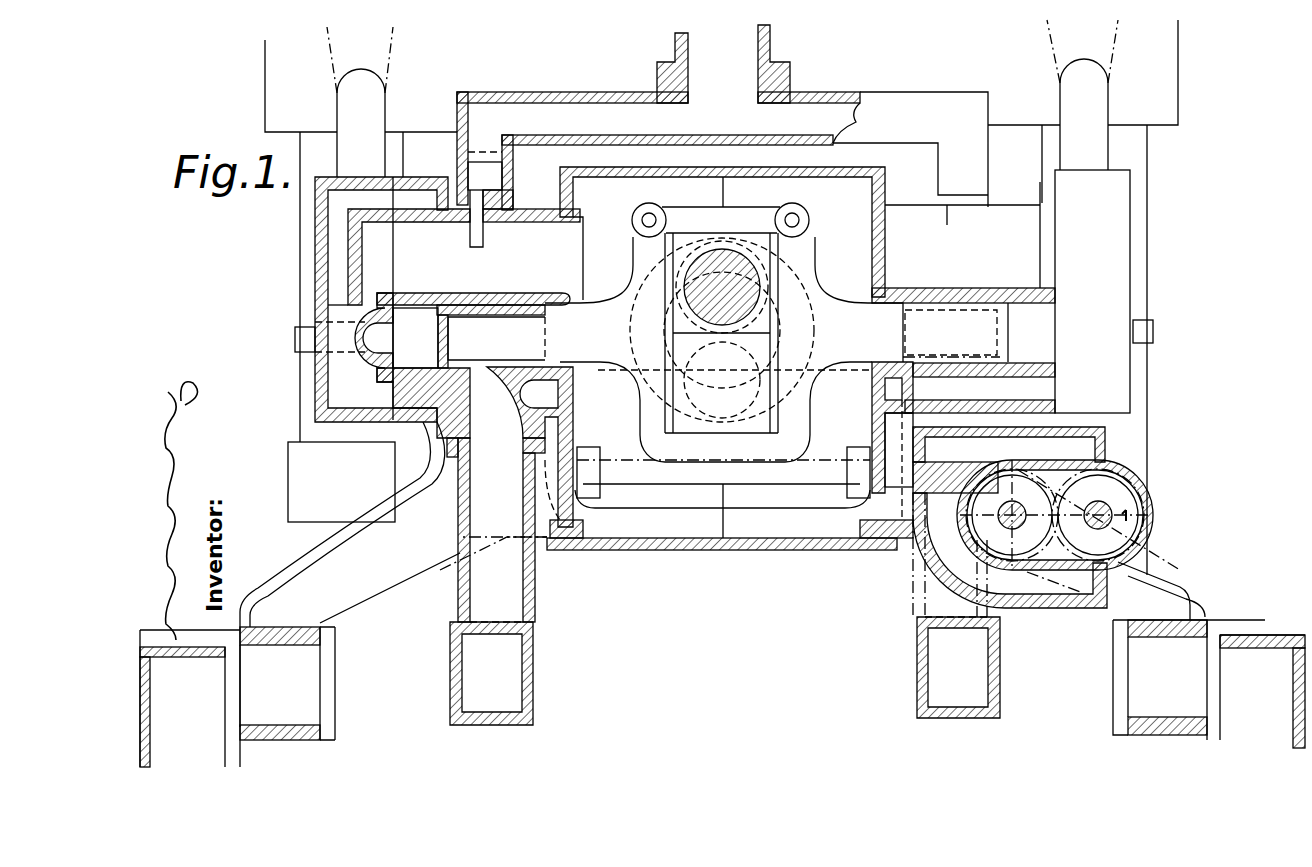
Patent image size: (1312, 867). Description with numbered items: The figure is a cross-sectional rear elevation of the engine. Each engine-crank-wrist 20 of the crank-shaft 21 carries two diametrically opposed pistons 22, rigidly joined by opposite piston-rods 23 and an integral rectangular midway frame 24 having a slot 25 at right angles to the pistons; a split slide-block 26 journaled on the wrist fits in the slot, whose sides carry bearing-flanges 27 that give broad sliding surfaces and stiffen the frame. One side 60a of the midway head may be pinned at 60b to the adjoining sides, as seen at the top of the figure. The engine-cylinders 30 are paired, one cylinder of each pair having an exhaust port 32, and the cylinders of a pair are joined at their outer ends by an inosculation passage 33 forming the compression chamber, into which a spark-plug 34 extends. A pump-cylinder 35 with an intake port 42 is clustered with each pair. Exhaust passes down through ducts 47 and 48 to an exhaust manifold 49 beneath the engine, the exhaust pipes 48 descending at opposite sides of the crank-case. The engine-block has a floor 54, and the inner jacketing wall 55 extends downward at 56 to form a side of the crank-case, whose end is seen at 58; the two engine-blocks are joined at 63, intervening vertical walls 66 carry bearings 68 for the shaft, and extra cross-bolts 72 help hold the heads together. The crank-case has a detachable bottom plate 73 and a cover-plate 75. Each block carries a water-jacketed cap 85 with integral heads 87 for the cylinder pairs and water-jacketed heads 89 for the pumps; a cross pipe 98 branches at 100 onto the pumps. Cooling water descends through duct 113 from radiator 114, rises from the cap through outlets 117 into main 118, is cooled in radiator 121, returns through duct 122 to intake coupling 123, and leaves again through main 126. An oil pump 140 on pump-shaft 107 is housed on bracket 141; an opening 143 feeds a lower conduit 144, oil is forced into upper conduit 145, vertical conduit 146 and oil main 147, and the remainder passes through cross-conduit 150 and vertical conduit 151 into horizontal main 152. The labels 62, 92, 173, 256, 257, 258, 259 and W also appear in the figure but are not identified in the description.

The engine-crank-wrist 20 is at (752, 395).
The crank-shaft 21 is at (720, 376).
The pistons 22 is at (724, 335).
The piston-rods 23 is at (724, 299).
The midway frame 24 is at (640, 400).
The slot 25 is at (778, 250).
The split slide-block 26 is at (760, 235).
The bearing-flanges 27 is at (778, 430).
The engine-cylinders 30 is at (945, 290).
The exhaust port 32 is at (988, 390).
The inosculation passage 33 is at (393, 336).
The spark-plug 34 is at (1153, 330).
The pump-cylinder 35 is at (583, 258).
The intake port 42 is at (470, 240).
The duct 47 is at (505, 432).
The exhaust pipe 48 is at (932, 600).
The exhaust manifold 49 is at (725, 671).
The floor 54 is at (425, 432).
The wall 55 is at (874, 203).
The downward extension of wall 56 is at (583, 525).
The crank-case end 58 is at (731, 309).
The side of midway head 60a is at (721, 220).
The hinge pin 60b is at (795, 212).
The valve chamber 62 is at (437, 392).
The line of joining 63 is at (723, 495).
The intervening vertical wall 66 is at (722, 496).
The bearing 68 is at (664, 320).
The extra cross-bolts 72 is at (723, 472).
The crank-case bottom plate 73 is at (787, 550).
The cover-plate 75 is at (666, 172).
The water-jacketed cap 85 is at (315, 238).
The integral head 87 is at (377, 375).
The pump head 89 is at (388, 243).
The pipe 92 is at (770, 42).
The cross pipe 98 is at (812, 95).
The branch 100 is at (938, 172).
The pump-shaft 107 is at (1098, 505).
The water-duct 113 is at (1147, 262).
The radiator 114 is at (1178, 50).
The outlets 117 is at (1108, 100).
The main 118 is at (1050, 48).
The radiator 121 is at (265, 72).
The duct 122 is at (315, 385).
The intake coupling 123 is at (341, 482).
The main 126 is at (387, 52).
The oil pump 140 is at (1148, 500).
The bracket 141 is at (1150, 545).
The opening 143 is at (862, 516).
The lower conduit 144 is at (1000, 610).
The upper conduit 145 is at (1009, 460).
The vertical conduit 146 is at (904, 458).
The oil main 147 is at (885, 388).
The cross-conduit 150 is at (676, 522).
The vertical conduit 151 is at (540, 465).
The horizontal main 152 is at (552, 325).
The gear 173 is at (813, 338).
The pipe 256 is at (1178, 562).
The tank 257 is at (1275, 645).
The tank chamber 258 is at (1207, 694).
The tank top 259 is at (1165, 638).
The water W is at (705, 293).